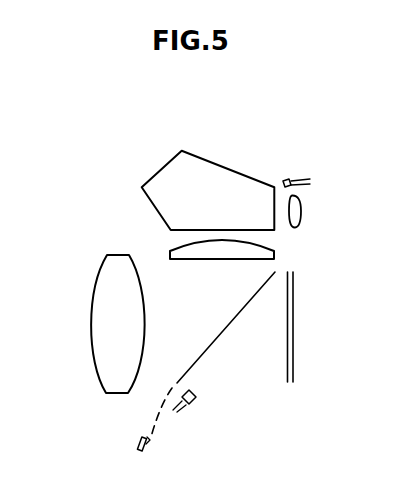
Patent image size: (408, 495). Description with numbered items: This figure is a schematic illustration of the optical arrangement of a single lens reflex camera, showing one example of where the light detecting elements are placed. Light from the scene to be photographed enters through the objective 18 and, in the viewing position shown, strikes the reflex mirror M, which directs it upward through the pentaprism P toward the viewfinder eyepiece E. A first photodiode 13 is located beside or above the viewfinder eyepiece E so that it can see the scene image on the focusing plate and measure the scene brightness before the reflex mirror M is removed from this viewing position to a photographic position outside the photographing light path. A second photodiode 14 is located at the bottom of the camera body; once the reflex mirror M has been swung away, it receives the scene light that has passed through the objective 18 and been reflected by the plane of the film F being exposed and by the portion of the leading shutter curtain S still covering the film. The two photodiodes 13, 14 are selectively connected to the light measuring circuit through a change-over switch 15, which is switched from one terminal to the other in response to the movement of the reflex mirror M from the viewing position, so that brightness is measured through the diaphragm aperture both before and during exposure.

The pentaprism P is at (213, 163).
The photodiode 13 is at (288, 178).
The viewfinder eyepiece E is at (299, 222).
The objective 18 is at (93, 358).
The reflex mirror M is at (213, 338).
The leading shutter curtain S is at (287, 360).
The film plane F is at (294, 360).
The photodiode 14 is at (196, 394).
The change-over switch 15 is at (136, 442).